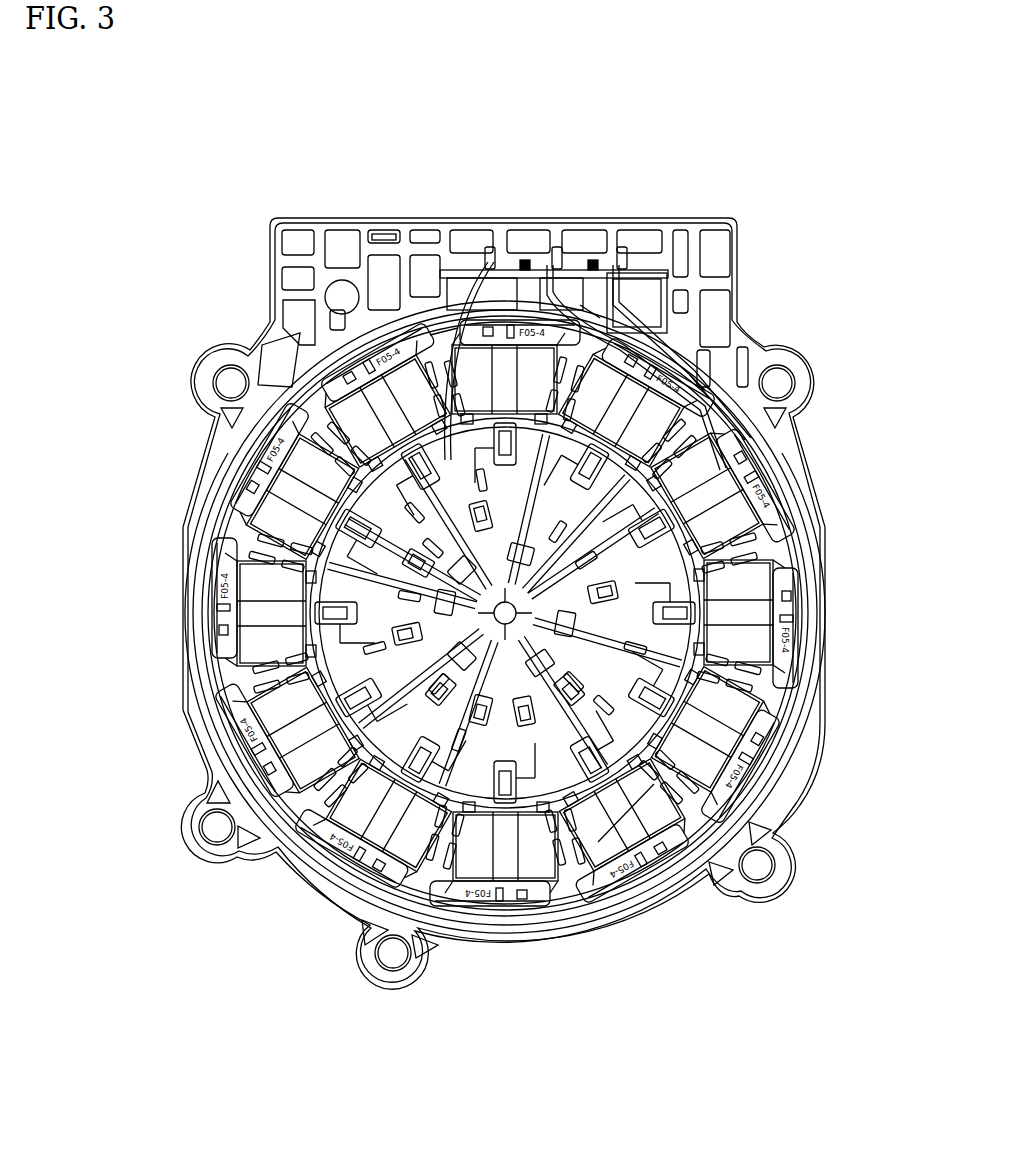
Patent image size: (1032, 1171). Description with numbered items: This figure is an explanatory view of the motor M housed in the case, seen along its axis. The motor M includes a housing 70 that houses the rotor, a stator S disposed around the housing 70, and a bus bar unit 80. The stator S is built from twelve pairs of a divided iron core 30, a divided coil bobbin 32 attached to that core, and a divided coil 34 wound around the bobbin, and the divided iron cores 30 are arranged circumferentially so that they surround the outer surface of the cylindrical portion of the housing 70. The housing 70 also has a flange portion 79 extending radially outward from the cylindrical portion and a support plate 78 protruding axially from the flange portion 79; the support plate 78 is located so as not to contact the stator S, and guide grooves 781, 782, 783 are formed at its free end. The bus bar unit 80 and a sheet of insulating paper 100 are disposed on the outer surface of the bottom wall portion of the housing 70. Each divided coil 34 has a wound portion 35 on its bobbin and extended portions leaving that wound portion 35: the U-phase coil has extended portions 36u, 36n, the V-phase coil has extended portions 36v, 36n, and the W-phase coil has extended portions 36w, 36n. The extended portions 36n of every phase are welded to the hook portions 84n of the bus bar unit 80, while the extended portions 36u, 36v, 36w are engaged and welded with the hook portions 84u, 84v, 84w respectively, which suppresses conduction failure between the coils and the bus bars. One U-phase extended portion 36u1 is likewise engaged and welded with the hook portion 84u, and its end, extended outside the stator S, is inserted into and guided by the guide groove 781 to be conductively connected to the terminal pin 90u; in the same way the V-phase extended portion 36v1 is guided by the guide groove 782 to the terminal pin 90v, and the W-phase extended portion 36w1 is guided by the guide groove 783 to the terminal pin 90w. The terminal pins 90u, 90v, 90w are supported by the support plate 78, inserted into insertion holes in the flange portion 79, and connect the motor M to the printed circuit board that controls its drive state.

The motor M is at (160, 470).
The stator S is at (205, 676).
The divided iron core 30 is at (775, 740).
The divided coil bobbin 32 is at (673, 840).
The divided coil 34 is at (615, 830).
The wound portion 35 is at (600, 830).
The extended portion 36u is at (700, 555).
The extended portion 36v is at (425, 805).
The extended portion 36w is at (330, 470).
The extended portion 36n is at (395, 760).
The extended portion 36u1 is at (430, 335).
The extended portion 36v1 is at (580, 305).
The extended portion 36w1 is at (690, 375).
The housing 70 is at (457, 216).
The support plate 78 is at (660, 305).
The guide groove 781 is at (470, 258).
The guide groove 782 is at (545, 262).
The guide groove 783 is at (650, 258).
The flange portion 79 is at (380, 232).
The bus bar unit 80 is at (745, 760).
The insulating paper 100 is at (560, 613).
The hook portion 84u is at (710, 620).
The hook portion 84v is at (483, 830).
The hook portion 84w is at (250, 548).
The hook portion 84n is at (315, 770).
The terminal pin 90u is at (508, 263).
The terminal pin 90v is at (585, 262).
The terminal pin 90w is at (650, 262).